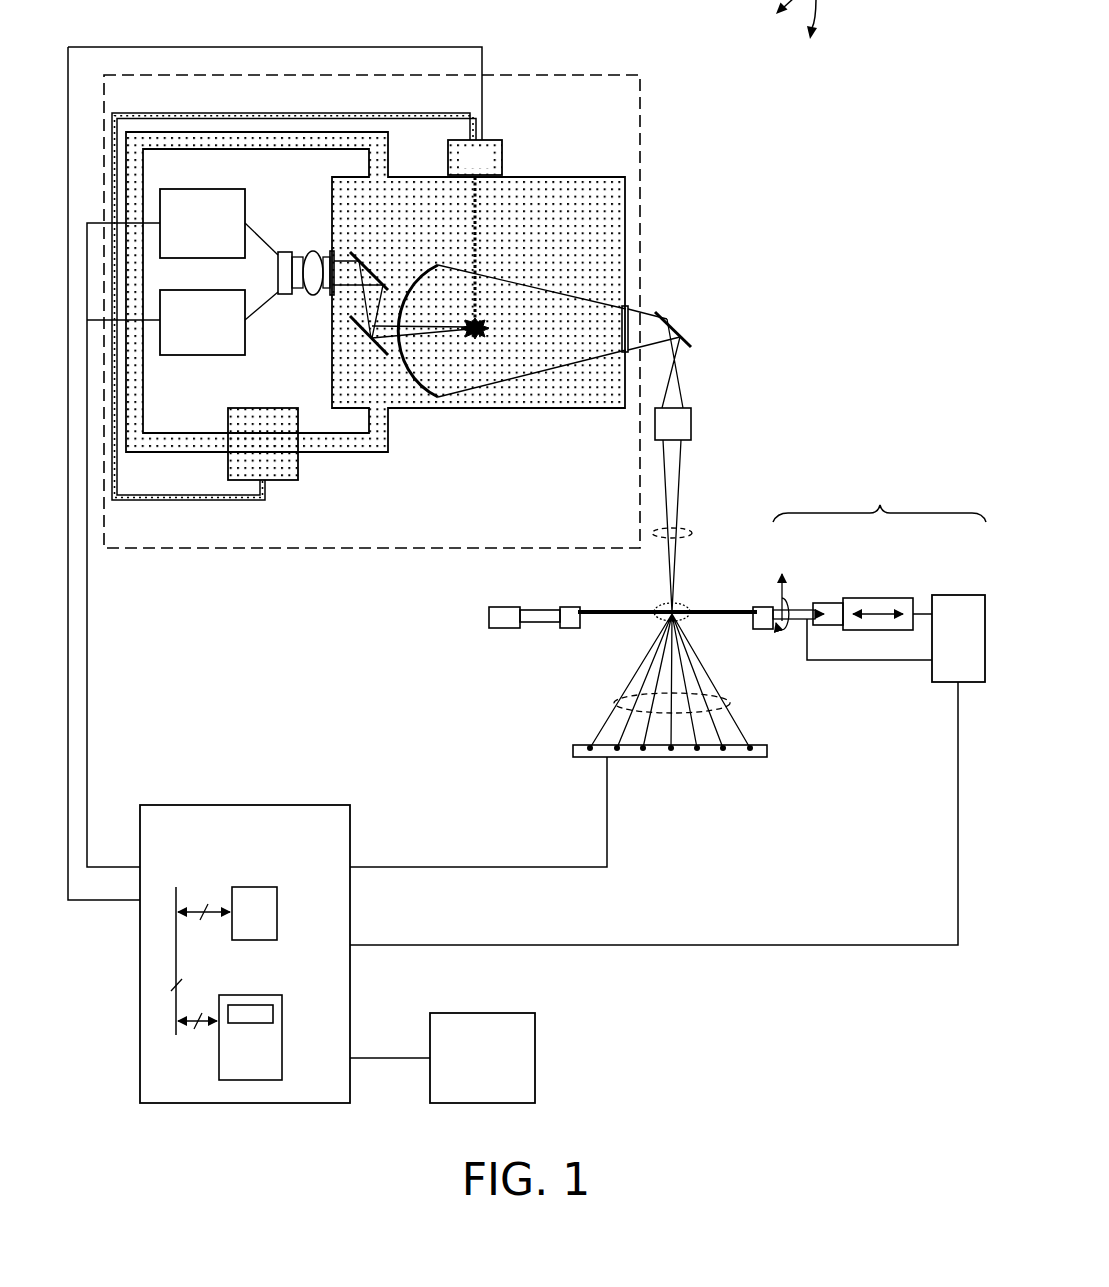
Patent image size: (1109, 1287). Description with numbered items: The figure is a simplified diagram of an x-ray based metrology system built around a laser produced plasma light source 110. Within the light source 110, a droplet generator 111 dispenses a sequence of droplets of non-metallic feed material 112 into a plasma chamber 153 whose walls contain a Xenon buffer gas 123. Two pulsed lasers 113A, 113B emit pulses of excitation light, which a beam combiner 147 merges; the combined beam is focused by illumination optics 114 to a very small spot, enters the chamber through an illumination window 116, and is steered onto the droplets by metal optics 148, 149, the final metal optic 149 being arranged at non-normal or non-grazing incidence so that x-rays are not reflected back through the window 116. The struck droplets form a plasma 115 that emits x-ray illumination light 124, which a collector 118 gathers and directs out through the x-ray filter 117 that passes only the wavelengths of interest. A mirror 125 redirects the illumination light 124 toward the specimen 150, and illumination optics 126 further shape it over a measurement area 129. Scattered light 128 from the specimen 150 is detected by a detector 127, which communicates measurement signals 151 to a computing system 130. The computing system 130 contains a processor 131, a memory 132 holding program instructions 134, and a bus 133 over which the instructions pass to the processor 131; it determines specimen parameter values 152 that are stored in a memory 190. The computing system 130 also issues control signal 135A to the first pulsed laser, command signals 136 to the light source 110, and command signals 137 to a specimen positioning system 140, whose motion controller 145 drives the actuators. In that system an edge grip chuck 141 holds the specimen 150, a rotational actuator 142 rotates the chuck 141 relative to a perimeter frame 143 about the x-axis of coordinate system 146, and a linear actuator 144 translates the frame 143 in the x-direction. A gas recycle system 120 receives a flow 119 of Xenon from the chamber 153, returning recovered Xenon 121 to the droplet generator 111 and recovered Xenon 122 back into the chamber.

The laser produced plasma light source 110 is at (150, 101).
The droplet generator 111 is at (461, 169).
The feed material 112 is at (478, 214).
The pulsed laser 113A is at (180, 247).
The pulsed laser 113B is at (180, 346).
The illumination optics 114 is at (313, 250).
The plasma 115 is at (490, 329).
The illumination window 116 is at (322, 296).
The x-ray filter 117 is at (630, 306).
The collector 118 is at (415, 272).
The flow of Xenon gas 119 is at (307, 443).
The gas recycle system 120 is at (244, 407).
The recovered Xenon 121 is at (192, 508).
The recovered Xenon 122 is at (136, 377).
The buffer gas 123 is at (572, 204).
The illumination light 124 is at (690, 533).
The mirror 125 is at (686, 340).
The illumination optics 126 is at (692, 426).
The detector 127 is at (707, 758).
The scattered light 128 is at (726, 704).
The measurement area 129 is at (680, 603).
The computing system 130 is at (231, 837).
The processor 131 is at (278, 916).
The memory 132 is at (219, 1068).
The bus 133 is at (180, 956).
The program instructions 134 is at (274, 1016).
The control signal 135A is at (95, 668).
The command signal 136 is at (493, 85).
The command signal 137 is at (453, 936).
The specimen positioning system 140 is at (880, 500).
The edge grip chuck 141 is at (758, 630).
The rotational actuator 142 is at (800, 622).
The perimeter frame 143 is at (831, 602).
The linear actuator 144 is at (884, 597).
The motion controller 145 is at (944, 649).
The coordinate system 146 is at (784, 591).
The beam combiner 147 is at (284, 251).
The metal optics 148 is at (360, 261).
The metal optics 149 is at (366, 348).
The specimen 150 is at (610, 609).
The signals 151 is at (515, 855).
The specimen parameter value 152 is at (408, 1047).
The plasma chamber 153 is at (509, 409).
The memory 190 is at (468, 1081).